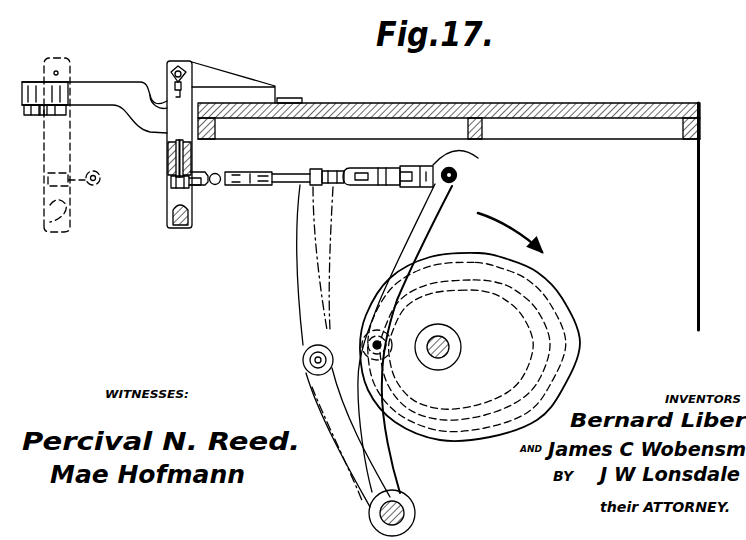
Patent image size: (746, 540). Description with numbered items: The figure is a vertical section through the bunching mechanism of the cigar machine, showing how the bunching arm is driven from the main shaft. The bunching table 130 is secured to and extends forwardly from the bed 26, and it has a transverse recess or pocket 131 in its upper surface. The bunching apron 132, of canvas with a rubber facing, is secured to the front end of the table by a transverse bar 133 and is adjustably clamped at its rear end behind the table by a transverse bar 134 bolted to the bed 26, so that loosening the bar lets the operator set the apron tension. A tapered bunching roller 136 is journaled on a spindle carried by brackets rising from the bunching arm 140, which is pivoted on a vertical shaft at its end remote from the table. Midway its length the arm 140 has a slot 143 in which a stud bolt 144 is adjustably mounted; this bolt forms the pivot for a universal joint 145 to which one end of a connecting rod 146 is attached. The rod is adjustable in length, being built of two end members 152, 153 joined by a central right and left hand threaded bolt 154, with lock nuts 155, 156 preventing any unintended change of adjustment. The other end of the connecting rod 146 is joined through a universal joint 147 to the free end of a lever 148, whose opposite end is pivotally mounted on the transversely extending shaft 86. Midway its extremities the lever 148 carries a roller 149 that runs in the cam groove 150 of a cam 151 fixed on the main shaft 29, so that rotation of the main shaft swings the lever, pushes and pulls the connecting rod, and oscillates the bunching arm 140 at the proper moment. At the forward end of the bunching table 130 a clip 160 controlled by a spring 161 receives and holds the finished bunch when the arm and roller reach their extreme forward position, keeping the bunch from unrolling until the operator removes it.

The bed 26 is at (352, 112).
The main shaft 29 is at (450, 342).
The transversely extending shaft 86 is at (404, 512).
The bunching table 130 is at (100, 82).
The transverse recess or pocket 131 is at (151, 94).
The bunching apron 132 is at (236, 56).
The transverse bar 133 is at (72, 100).
The transverse bar 134 is at (292, 98).
The tapered bunching roller 136 is at (200, 45).
The bunching arm 140 is at (172, 226).
The slot 143 is at (168, 162).
The stud bolt 144 is at (170, 180).
The universal joint 145 is at (205, 187).
The connecting rod 146 is at (309, 192).
The universal joint 147 is at (457, 176).
The lever 148 is at (405, 239).
The roller 149 is at (368, 330).
The cam groove 150 is at (547, 310).
The cam 151 is at (578, 350).
The end member 152 is at (243, 186).
The end member 153 is at (430, 187).
The right and left hand threaded bolt 154 is at (338, 184).
The lock nut 155 is at (283, 174).
The lock nut 156 is at (358, 162).
The clip 160 is at (25, 84).
The spring 161 is at (43, 112).